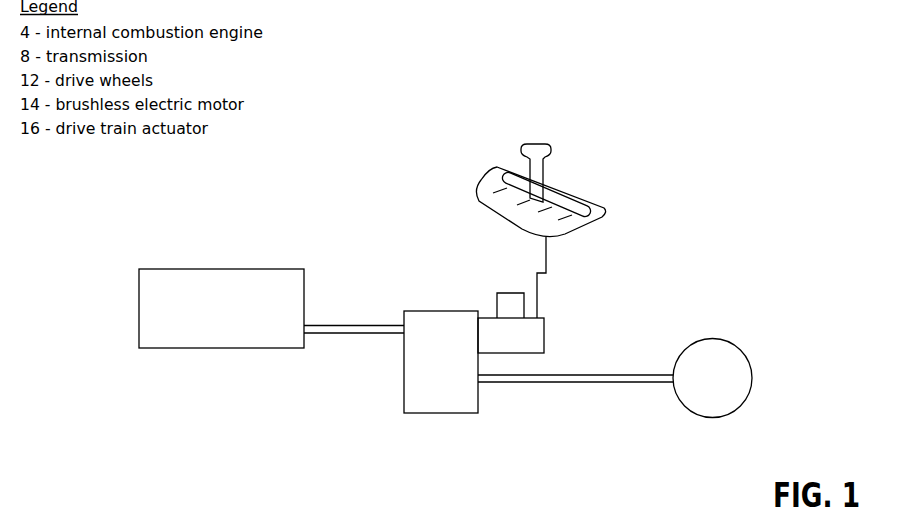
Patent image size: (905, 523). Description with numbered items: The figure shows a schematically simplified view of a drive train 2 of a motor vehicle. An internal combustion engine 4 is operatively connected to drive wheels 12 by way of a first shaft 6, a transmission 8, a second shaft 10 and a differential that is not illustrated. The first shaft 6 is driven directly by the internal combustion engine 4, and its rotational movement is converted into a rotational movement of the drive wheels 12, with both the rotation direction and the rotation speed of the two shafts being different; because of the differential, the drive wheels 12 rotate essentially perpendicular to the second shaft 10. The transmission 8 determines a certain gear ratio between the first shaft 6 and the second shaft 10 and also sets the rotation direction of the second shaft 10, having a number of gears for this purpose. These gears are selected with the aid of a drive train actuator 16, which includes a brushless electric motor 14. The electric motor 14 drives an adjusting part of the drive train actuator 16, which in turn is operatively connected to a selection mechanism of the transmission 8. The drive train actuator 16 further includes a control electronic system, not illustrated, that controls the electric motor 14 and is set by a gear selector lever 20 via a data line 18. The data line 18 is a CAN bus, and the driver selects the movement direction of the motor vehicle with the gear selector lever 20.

The drive train 2 is at (645, 128).
The internal combustion engine 4 is at (224, 268).
The first shaft 6 is at (359, 325).
The transmission 8 is at (441, 413).
The second shaft 10 is at (575, 382).
The drive wheels 12 is at (712, 339).
The brushless electric motor 14 is at (510, 293).
The drive train actuator 16 is at (544, 335).
The data line 18 is at (546, 262).
The gear selector lever 20 is at (537, 144).